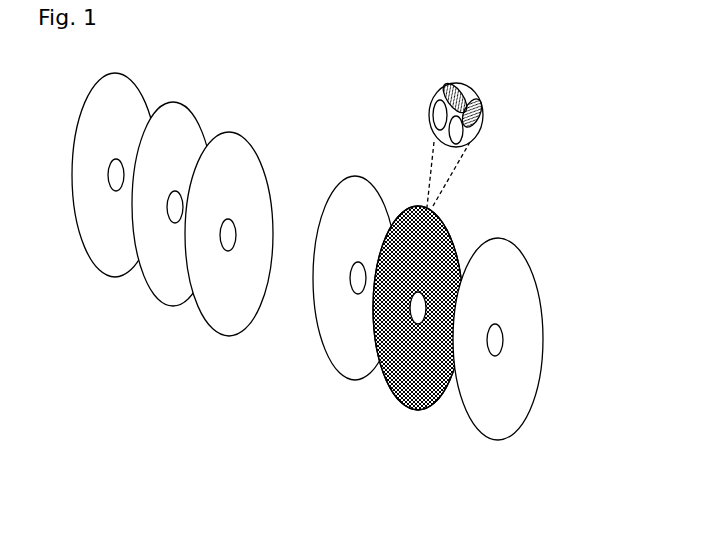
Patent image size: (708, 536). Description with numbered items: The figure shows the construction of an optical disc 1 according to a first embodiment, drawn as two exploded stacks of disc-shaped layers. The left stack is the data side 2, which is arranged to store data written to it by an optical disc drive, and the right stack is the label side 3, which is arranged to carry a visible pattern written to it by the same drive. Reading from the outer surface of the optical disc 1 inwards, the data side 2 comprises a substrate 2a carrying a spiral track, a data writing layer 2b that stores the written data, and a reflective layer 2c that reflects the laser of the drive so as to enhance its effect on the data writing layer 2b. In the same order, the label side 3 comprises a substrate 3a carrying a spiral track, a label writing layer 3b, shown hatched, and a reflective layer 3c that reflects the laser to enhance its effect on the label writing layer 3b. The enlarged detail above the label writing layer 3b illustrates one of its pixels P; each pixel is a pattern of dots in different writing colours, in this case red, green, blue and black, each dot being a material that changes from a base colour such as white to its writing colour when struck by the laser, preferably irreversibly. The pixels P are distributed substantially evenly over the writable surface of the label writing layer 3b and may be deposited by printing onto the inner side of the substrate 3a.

The optical disc 1 is at (582, 59).
The data side 2 is at (165, 241).
The substrate 2a is at (115, 175).
The data writing layer 2b is at (173, 204).
The reflective layer 2c is at (229, 234).
The label side 3 is at (424, 341).
The substrate 3a is at (498, 339).
The label writing layer 3b is at (418, 308).
The reflective layer 3c is at (355, 278).
The pixels P is at (483, 110).